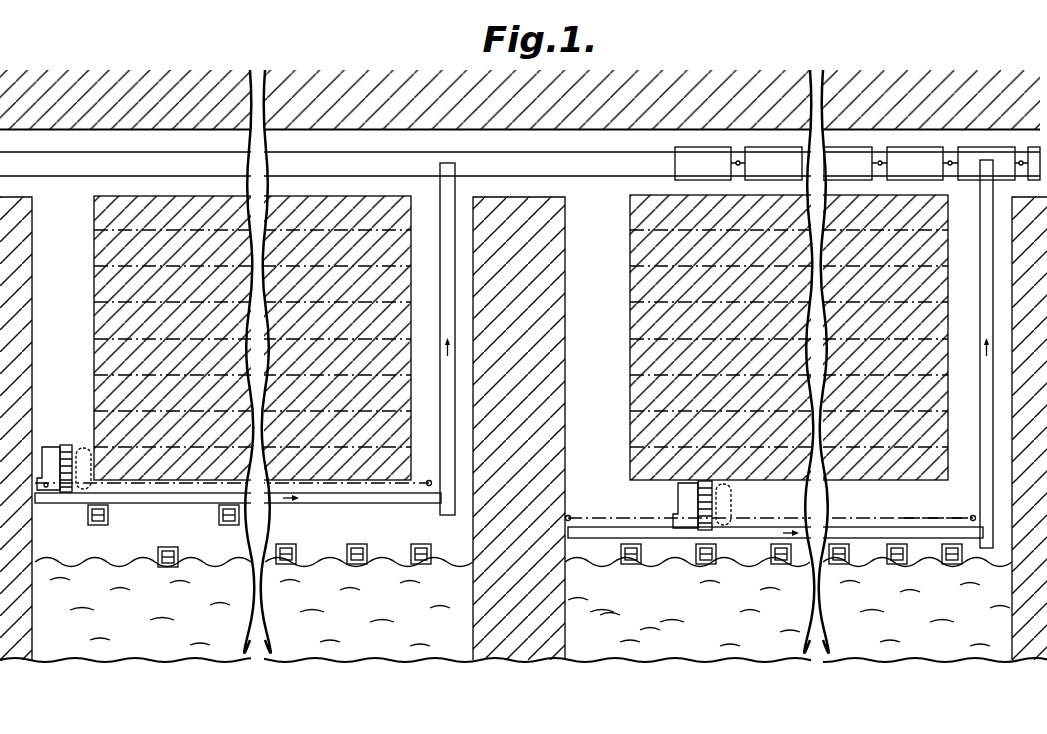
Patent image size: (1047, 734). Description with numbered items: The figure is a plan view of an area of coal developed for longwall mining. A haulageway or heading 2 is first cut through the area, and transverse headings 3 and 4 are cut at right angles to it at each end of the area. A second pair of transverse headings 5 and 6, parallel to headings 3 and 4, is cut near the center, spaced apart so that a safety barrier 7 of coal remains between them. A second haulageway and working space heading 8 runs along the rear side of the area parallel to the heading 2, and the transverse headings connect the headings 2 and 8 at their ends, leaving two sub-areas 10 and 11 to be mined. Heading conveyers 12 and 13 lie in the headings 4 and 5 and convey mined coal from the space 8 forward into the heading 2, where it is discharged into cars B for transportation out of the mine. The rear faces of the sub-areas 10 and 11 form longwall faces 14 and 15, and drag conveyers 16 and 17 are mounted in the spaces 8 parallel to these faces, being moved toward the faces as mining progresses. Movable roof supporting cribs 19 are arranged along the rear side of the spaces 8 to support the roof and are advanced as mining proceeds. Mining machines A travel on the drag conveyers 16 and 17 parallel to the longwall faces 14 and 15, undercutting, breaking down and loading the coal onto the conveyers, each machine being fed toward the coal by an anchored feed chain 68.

The haulageway or heading 2 is at (520, 154).
The transverse heading 3 is at (32, 428).
The transverse heading 4 is at (975, 354).
The transverse heading 5 is at (434, 339).
The transverse heading 6 is at (614, 474).
The safety barrier 7 is at (525, 403).
The second haulageway and working space heading 8 is at (523, 598).
The sub-area 10 is at (180, 333).
The sub-area 11 is at (715, 333).
The heading conveyer 12 is at (985, 405).
The heading conveyer 13 is at (447, 407).
The longwall face 14 is at (362, 480).
The longwall face 15 is at (910, 516).
The drag conveyer 16 is at (343, 499).
The drag conveyer 17 is at (606, 533).
The movable roof supporting cribs 19 is at (108, 517).
The anchored feed chain 68 is at (385, 485).
The mining machine A is at (52, 455).
The cars B is at (970, 160).